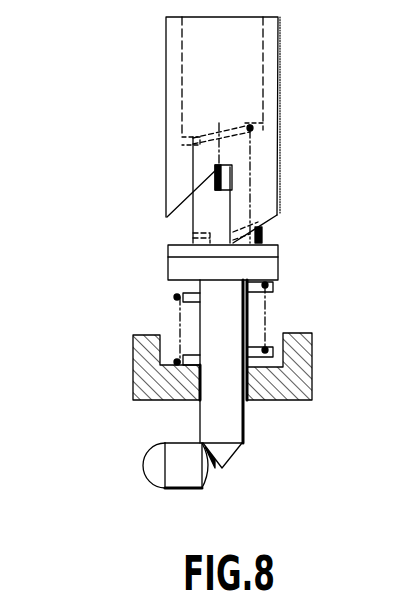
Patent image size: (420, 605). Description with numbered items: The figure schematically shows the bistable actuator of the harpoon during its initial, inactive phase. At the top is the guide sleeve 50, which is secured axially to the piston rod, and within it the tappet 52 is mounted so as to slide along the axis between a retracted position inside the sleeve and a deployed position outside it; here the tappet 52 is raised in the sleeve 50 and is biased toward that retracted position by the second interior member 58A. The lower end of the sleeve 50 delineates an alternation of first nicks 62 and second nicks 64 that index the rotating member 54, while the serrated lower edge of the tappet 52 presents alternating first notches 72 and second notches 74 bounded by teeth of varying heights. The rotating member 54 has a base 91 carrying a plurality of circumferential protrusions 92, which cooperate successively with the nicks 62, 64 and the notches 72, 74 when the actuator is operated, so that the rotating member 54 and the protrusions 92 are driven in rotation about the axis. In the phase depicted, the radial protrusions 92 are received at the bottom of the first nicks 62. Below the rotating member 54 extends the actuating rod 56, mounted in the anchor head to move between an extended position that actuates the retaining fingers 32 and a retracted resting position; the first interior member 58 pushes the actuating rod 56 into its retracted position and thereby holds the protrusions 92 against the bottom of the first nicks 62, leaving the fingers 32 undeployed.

The guide sleeve 50 is at (166, 73).
The tappet 52 is at (182, 117).
The first nicks 62 is at (220, 165).
The first notches 72 is at (223, 153).
The circumferential protrusions 92 is at (182, 227).
The second interior member 58A is at (266, 128).
The second notches 74 is at (193, 135).
The second nicks 64 is at (280, 216).
The base 91 is at (273, 252).
The actuating rod 56 is at (210, 320).
The first interior member 58 is at (267, 284).
The retaining fingers 32 is at (182, 482).
The rotating member 54 is at (140, 270).